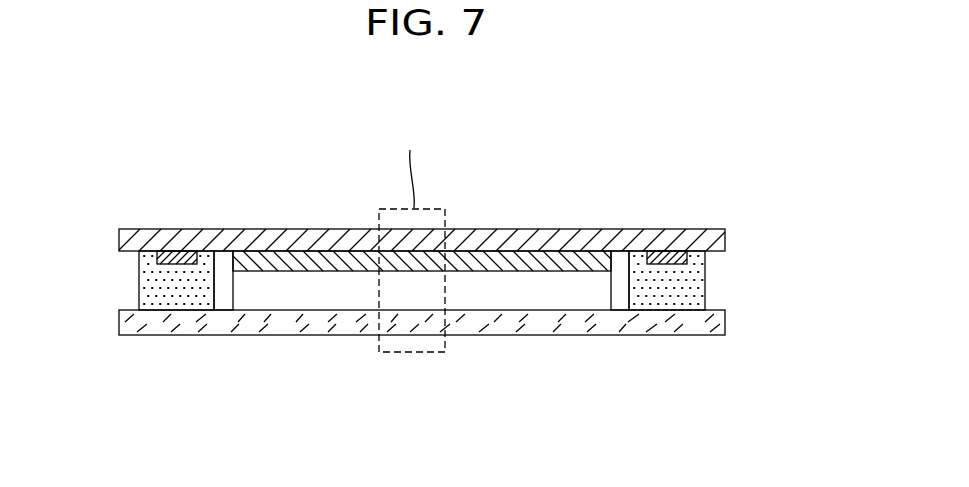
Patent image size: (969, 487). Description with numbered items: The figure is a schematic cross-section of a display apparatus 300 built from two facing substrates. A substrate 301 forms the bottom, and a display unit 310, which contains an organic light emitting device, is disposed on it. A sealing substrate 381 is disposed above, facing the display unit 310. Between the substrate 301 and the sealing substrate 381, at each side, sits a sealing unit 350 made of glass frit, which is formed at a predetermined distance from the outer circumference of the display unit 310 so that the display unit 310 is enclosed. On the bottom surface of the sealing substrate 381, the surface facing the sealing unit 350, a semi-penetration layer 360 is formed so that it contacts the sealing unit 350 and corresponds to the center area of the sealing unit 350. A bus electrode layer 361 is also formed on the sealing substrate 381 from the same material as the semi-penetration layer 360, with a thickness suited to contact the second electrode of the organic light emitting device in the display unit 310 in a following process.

The display apparatus 300 is at (681, 182).
The substrate 301 is at (715, 322).
The display unit 310 is at (476, 293).
The sealing unit 350 is at (150, 290).
The semi-penetration layer 360 is at (155, 259).
The bus electrode layer 361 is at (478, 256).
The sealing substrate 381 is at (715, 238).